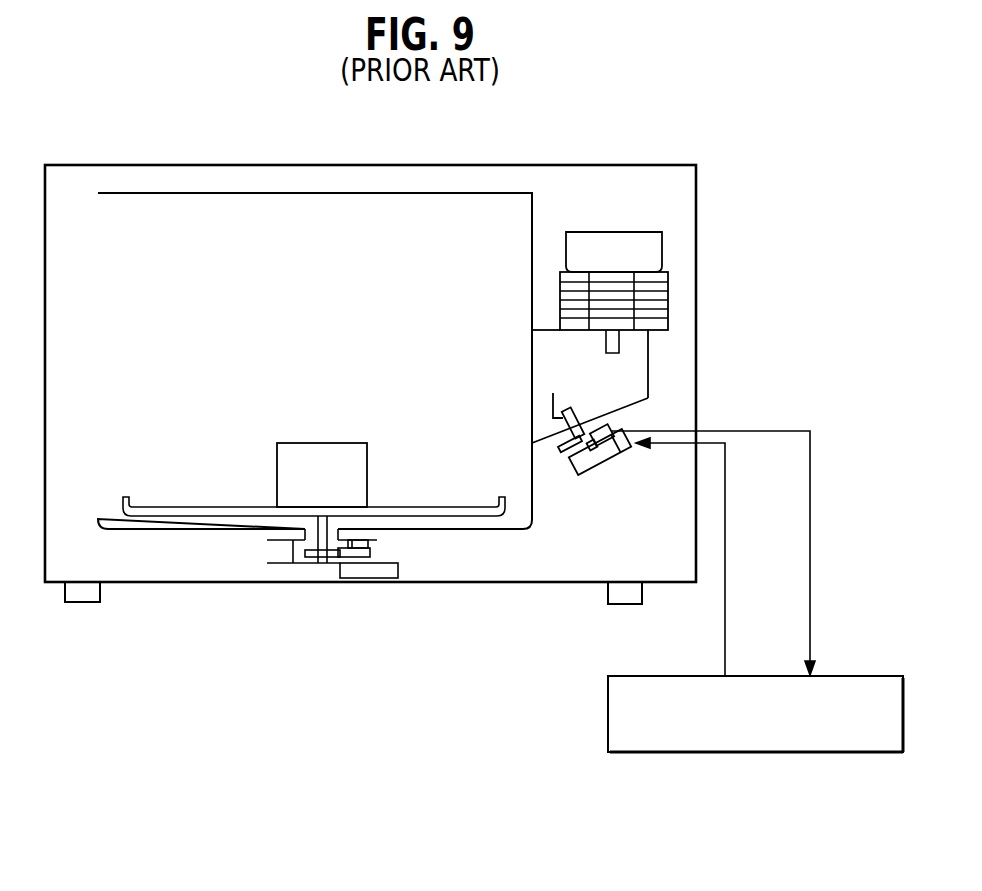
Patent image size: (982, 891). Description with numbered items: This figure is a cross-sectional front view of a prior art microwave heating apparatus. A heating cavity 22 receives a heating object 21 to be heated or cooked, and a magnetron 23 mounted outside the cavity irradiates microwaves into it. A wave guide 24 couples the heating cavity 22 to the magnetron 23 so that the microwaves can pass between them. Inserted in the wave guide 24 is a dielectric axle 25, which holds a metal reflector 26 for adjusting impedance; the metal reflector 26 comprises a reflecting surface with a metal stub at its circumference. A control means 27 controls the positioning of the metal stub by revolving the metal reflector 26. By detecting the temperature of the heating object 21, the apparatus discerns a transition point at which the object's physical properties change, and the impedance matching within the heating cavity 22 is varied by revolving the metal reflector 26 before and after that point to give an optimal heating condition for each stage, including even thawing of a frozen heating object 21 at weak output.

The heating object 21 is at (313, 443).
The heating cavity 22 is at (533, 201).
The magnetron 23 is at (663, 247).
The wave guide 24 is at (650, 363).
The dielectric axle 25 is at (558, 432).
The metal reflector 26 is at (565, 410).
The control means 27 is at (658, 755).